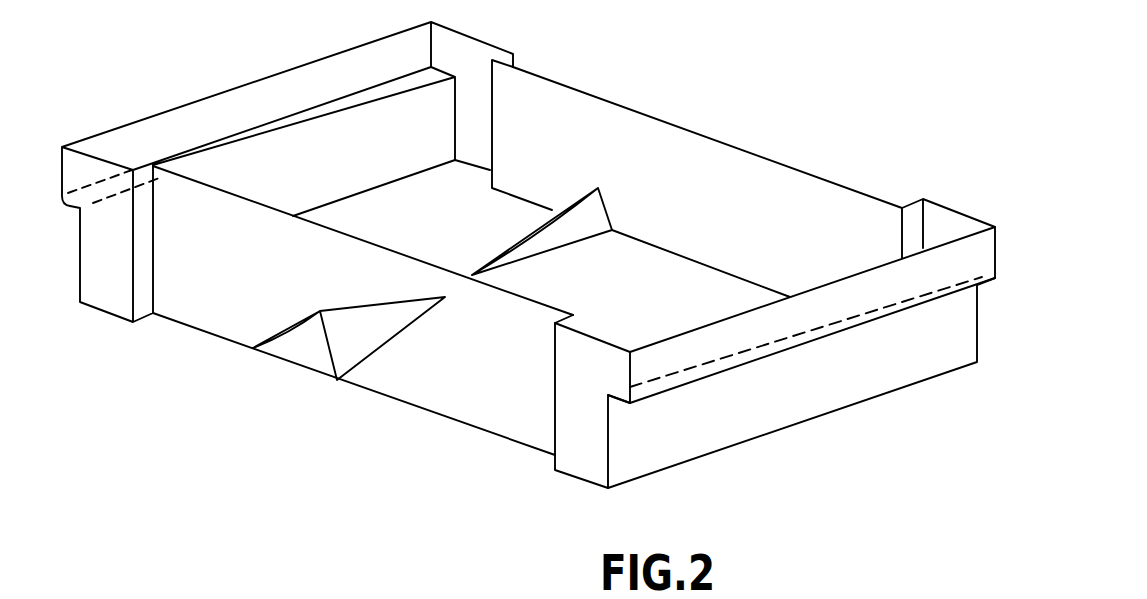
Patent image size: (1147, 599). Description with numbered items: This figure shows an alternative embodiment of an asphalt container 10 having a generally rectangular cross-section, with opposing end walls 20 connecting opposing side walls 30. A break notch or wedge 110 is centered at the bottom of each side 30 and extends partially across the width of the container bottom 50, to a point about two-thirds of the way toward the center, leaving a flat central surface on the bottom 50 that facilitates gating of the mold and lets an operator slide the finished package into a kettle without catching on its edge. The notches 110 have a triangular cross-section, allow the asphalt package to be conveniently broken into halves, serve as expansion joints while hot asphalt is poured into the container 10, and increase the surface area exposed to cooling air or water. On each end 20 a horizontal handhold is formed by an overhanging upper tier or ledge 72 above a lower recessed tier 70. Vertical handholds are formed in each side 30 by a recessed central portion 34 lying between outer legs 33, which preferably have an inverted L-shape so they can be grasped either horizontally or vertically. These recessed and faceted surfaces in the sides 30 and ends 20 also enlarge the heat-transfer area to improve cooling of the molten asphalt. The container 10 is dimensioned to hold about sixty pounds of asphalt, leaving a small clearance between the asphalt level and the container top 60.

The container 10 is at (193, 333).
The end wall 20 is at (862, 384).
The side wall 30 is at (625, 105).
The outer leg 33 is at (575, 460).
The recessed central portion 34 is at (425, 397).
The container bottom 50 is at (718, 288).
The container top 60 is at (962, 210).
The lower recessed tier 70 is at (970, 327).
The overhanging upper tier 72 is at (983, 253).
The break notch 110 is at (343, 352).